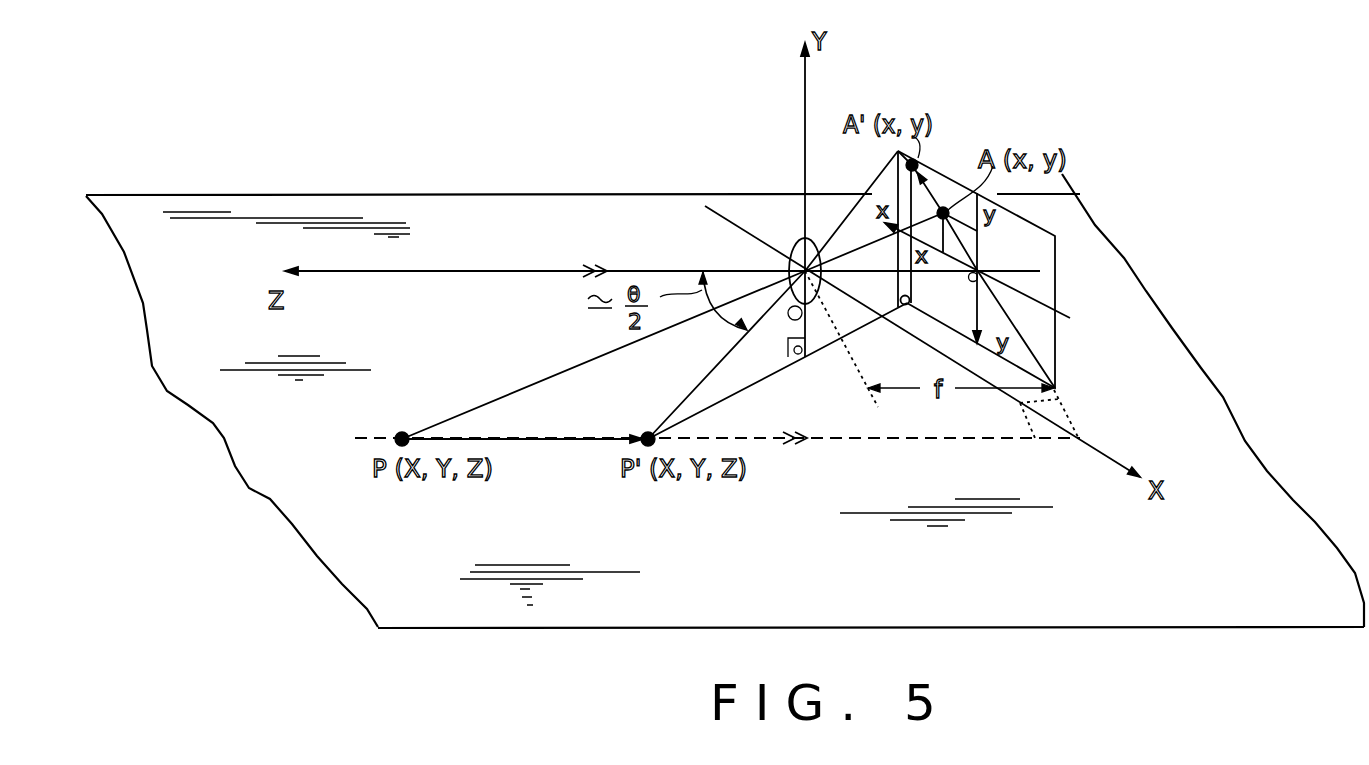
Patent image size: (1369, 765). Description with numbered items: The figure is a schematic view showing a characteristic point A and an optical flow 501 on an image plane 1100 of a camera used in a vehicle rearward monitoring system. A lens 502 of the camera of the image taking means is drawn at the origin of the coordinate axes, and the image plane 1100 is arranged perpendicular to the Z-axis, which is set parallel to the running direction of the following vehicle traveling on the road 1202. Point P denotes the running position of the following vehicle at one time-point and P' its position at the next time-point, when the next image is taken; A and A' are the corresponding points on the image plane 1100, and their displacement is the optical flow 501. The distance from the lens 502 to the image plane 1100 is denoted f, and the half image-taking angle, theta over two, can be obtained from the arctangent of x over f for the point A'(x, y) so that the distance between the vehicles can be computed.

The optical flow 501 is at (930, 193).
The lens 502 is at (791, 250).
The image plane 1100 is at (1040, 255).
The road 1202 is at (410, 528).